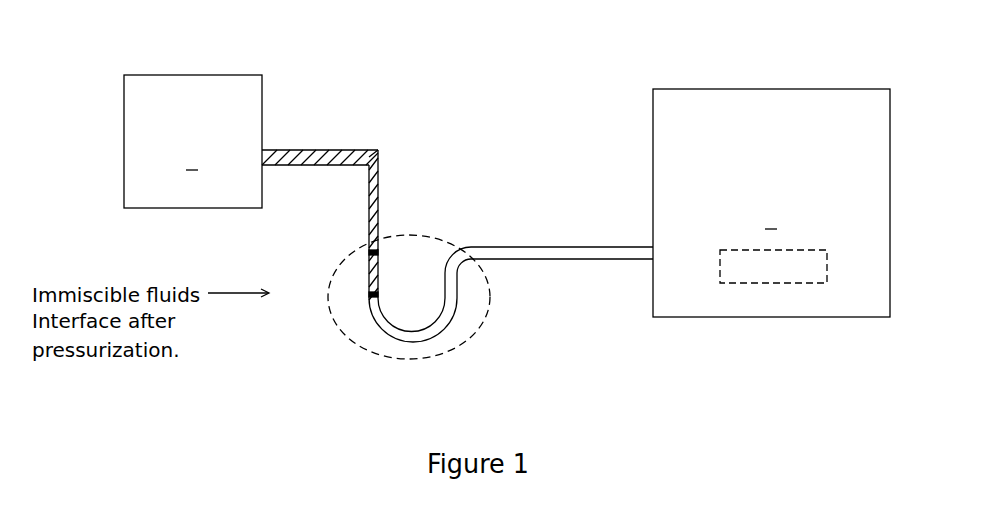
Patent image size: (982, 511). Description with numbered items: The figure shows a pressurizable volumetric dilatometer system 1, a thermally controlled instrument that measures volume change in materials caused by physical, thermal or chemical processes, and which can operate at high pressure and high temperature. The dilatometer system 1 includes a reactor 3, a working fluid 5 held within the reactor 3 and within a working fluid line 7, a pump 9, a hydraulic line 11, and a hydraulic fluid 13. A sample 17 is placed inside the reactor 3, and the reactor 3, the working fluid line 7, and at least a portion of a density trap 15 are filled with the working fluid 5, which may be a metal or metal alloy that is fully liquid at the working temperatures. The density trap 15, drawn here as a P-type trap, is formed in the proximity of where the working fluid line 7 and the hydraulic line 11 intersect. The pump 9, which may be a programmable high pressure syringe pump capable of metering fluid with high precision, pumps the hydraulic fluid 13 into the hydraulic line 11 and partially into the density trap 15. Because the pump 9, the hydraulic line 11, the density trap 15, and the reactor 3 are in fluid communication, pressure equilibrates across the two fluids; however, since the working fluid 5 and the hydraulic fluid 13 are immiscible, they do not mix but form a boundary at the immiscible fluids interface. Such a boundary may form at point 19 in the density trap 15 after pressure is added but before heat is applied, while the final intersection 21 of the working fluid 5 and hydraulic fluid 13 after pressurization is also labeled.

The dilatometer system 1 is at (563, 61).
The reactor 3 is at (771, 203).
The working fluid 5 is at (685, 197).
The working fluid line 7 is at (537, 247).
The pump 9 is at (193, 141).
The hydraulic line 11 is at (300, 150).
The hydraulic fluid 13 is at (377, 182).
The density trap 15 is at (462, 340).
The sample 17 is at (748, 283).
The immiscible fluid boundary point 19 is at (367, 293).
The final intersection 21 is at (367, 253).